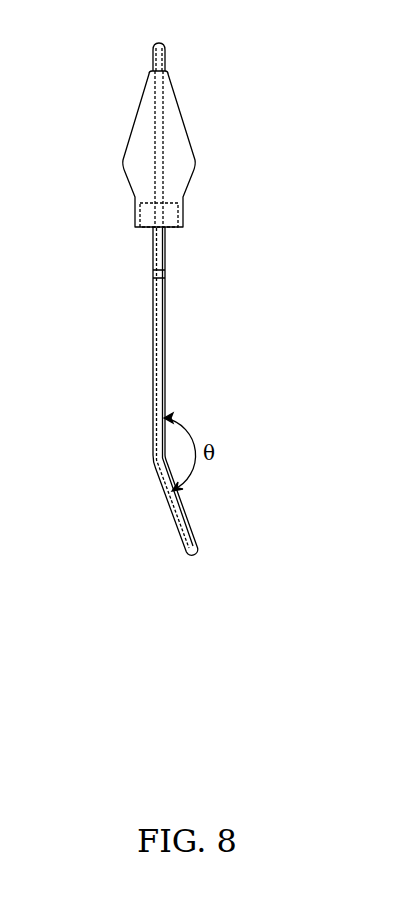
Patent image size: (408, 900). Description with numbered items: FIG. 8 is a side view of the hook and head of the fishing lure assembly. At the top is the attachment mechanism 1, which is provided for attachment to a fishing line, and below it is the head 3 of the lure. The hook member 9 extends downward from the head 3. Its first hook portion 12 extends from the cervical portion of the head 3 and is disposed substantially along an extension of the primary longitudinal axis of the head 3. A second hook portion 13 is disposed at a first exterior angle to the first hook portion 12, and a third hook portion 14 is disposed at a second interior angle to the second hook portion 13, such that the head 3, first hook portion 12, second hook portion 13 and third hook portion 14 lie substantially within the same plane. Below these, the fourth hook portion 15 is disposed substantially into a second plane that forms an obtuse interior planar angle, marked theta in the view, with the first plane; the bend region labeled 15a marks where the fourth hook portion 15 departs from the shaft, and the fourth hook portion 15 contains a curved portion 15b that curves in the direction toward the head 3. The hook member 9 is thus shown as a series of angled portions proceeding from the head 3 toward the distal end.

The attachment mechanism 1 is at (165, 47).
The head 3 is at (184, 77).
The hook member 9 is at (153, 369).
The first hook portion 12 is at (166, 254).
The second hook portion 13 is at (153, 272).
The third hook portion 14 is at (166, 298).
The fourth hook portion 15 is at (198, 515).
The bend 15a is at (155, 463).
The curved portion 15b is at (182, 533).